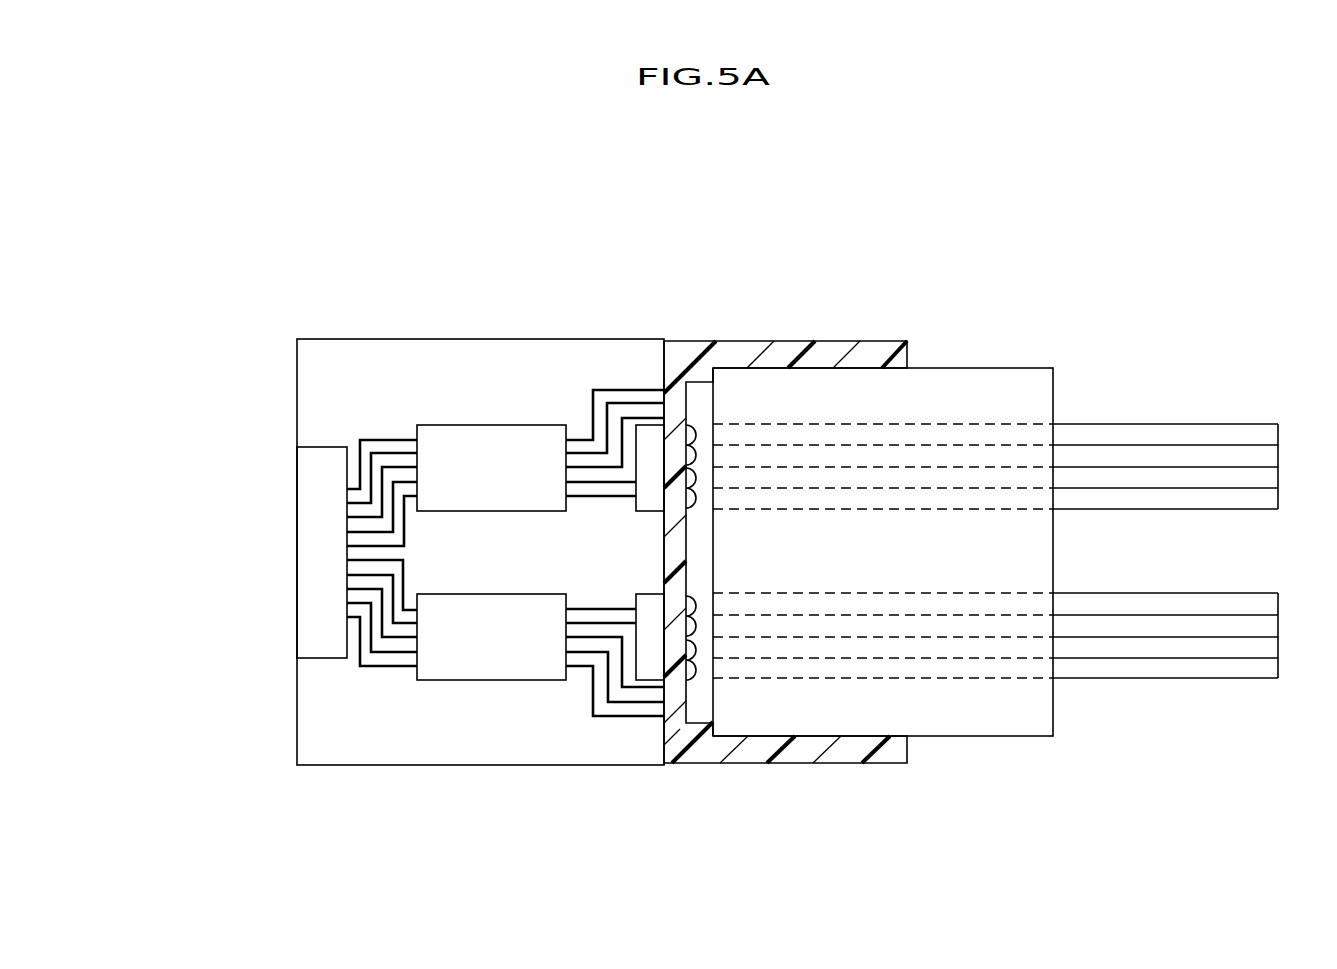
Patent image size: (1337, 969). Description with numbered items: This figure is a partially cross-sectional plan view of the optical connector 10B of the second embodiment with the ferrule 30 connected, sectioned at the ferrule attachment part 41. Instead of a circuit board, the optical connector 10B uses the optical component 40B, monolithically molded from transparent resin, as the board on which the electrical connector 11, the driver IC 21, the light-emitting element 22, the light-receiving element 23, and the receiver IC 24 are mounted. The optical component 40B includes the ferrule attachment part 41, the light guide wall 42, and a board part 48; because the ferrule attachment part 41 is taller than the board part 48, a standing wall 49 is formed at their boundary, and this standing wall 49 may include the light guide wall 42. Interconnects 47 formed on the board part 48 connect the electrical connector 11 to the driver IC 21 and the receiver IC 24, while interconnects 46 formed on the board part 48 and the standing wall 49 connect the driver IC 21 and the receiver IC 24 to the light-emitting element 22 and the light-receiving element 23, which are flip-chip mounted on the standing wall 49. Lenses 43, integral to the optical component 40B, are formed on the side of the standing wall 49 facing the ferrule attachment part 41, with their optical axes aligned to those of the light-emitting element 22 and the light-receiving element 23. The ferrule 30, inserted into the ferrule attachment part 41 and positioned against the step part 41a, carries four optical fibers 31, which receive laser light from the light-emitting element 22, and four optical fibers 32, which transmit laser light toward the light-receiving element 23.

The optical connector 10B is at (987, 239).
The electrical connector 11 is at (311, 524).
The driver IC 21 is at (494, 667).
The light-emitting element 22 is at (653, 665).
The light-receiving element 23 is at (653, 440).
The receiver IC 24 is at (494, 440).
The ferrule 30 is at (1030, 378).
The optical fibers 31 is at (1293, 593).
The optical fibers 32 is at (1293, 424).
The optical component 40B is at (781, 554).
The ferrule attachment part 41 is at (853, 370).
The step part 41a is at (718, 374).
The light guide wall 42 is at (677, 405).
The lenses 43 is at (688, 500).
The interconnects 46 is at (585, 455).
The interconnects 47 is at (366, 515).
The board part 48 is at (448, 742).
The standing wall 49 is at (664, 746).